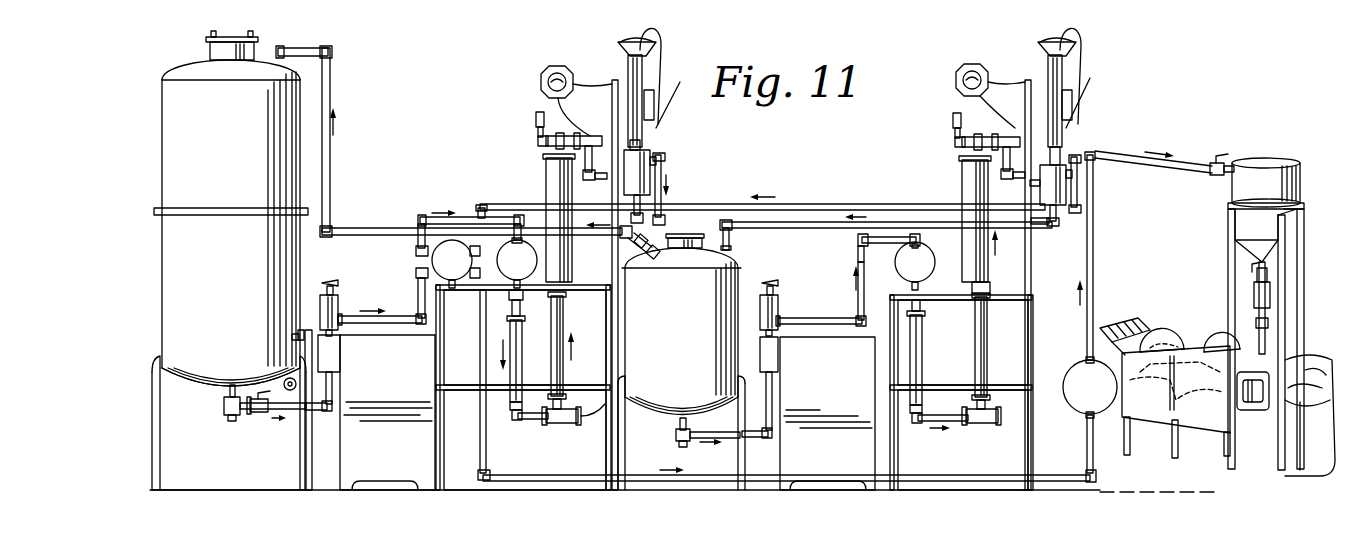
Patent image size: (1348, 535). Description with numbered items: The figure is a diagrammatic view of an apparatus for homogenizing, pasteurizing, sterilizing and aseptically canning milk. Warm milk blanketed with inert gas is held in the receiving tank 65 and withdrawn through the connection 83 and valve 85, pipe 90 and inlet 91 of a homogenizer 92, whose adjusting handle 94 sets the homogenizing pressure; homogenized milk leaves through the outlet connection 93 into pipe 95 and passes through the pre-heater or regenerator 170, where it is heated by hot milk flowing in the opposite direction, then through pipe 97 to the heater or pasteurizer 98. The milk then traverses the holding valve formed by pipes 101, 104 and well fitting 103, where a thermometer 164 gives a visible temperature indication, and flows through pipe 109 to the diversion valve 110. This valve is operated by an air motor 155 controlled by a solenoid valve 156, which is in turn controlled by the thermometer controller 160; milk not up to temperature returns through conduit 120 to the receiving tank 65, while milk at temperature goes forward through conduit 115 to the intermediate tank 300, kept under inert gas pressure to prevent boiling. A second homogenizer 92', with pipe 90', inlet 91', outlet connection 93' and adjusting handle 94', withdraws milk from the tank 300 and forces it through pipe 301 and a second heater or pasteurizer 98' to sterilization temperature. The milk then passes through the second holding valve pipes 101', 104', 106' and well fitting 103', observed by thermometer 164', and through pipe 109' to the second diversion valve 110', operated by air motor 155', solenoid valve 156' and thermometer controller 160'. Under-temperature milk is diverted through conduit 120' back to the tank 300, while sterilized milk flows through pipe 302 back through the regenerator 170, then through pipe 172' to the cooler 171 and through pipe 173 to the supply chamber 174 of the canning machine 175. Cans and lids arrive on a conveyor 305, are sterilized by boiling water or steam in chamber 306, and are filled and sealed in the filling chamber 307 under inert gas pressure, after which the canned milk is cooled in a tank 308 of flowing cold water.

The receiving tank 65 is at (290, 262).
The conduit 120 is at (449, 141).
The outlet connection 93 is at (344, 307).
The adjusting handle 94 is at (342, 280).
The pipe 95 is at (404, 318).
The inlet 91 is at (344, 369).
The pipe 90 is at (320, 421).
The homogenizer 92 is at (374, 412).
The connection 83 is at (236, 416).
The valve 85 is at (258, 412).
The pipe 97 is at (432, 222).
The pre-heater or regenerator 170 is at (438, 264).
The heater or pasteurizer 98 is at (505, 256).
The pipe 172' is at (787, 386).
The holding valve pipe 101 is at (503, 350).
The holding valve pipe 104 is at (574, 350).
The well fitting 103 is at (558, 427).
The thermometer controller 160 is at (553, 174).
The thermometer 164 is at (550, 146).
The pipe 109 is at (586, 192).
The air motor 155 is at (612, 88).
The solenoid valve 156 is at (670, 78).
The diversion valve 110 is at (661, 182).
The milk conduit 115 is at (660, 230).
The pipe 302 is at (840, 204).
The intermediate tank 300 is at (735, 270).
The conduit 120' is at (886, 235).
The outlet connection 93' is at (788, 311).
The adjusting handle 94' is at (787, 282).
The pipe 301 is at (818, 318).
The inlet 91' is at (787, 383).
The pipe 90' is at (757, 441).
The second homogenizer 92' is at (810, 413).
The second heater or pasteurizer 98' is at (902, 266).
The holding valve pipe 106' is at (908, 248).
The holding valve pipe 101' is at (935, 356).
The holding valve pipe 104' is at (959, 345).
The well fitting 103' is at (956, 428).
The thermometer controller 160' is at (968, 173).
The thermometer 164' is at (962, 146).
The pipe 109' is at (1005, 192).
The air motor 155' is at (1031, 86).
The solenoid valve 156' is at (1093, 78).
The diversion valve 110' is at (1083, 186).
The pipe 173 is at (1093, 258).
The cooler 171 is at (1078, 372).
The supply chamber 174 is at (1232, 192).
The conveyor 305 is at (1126, 324).
The chamber 306 is at (1155, 416).
The filling chamber 307 is at (1254, 408).
The canning machine 175 is at (1318, 322).
The tank 308 is at (1322, 360).